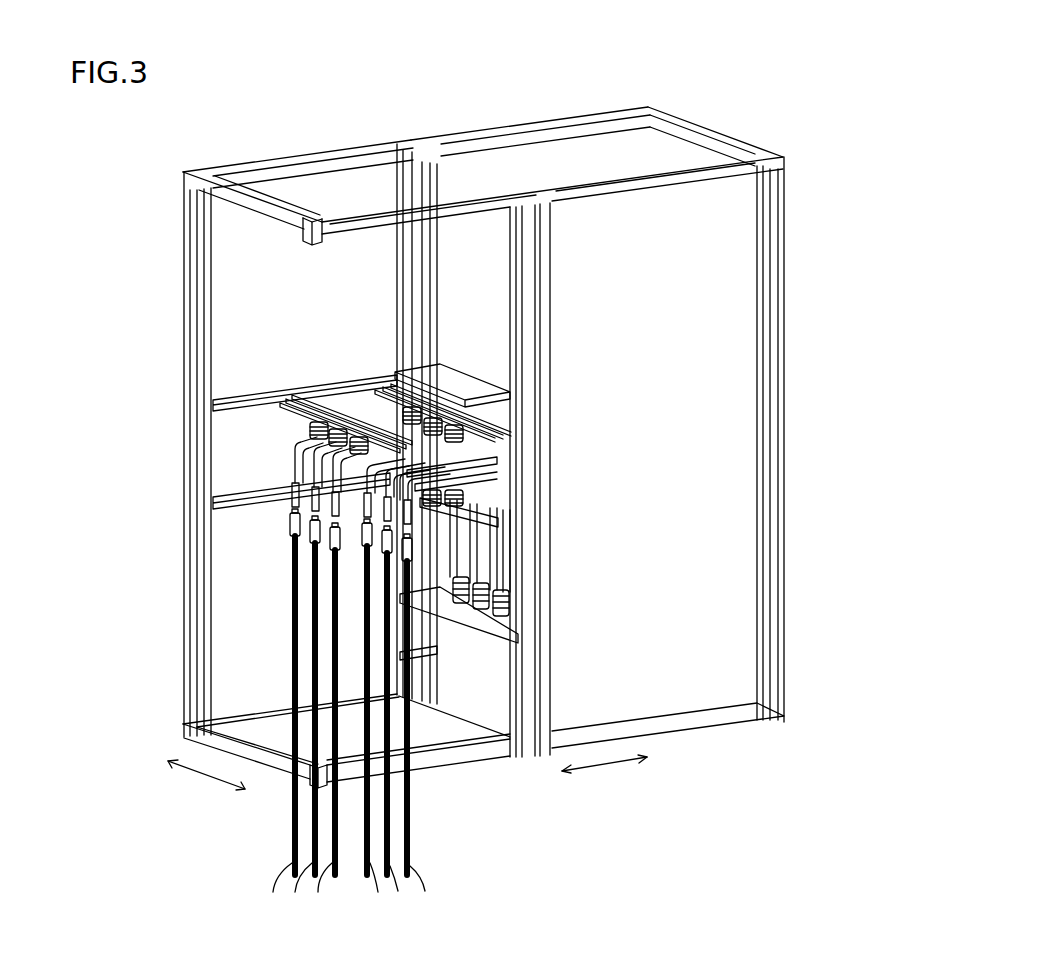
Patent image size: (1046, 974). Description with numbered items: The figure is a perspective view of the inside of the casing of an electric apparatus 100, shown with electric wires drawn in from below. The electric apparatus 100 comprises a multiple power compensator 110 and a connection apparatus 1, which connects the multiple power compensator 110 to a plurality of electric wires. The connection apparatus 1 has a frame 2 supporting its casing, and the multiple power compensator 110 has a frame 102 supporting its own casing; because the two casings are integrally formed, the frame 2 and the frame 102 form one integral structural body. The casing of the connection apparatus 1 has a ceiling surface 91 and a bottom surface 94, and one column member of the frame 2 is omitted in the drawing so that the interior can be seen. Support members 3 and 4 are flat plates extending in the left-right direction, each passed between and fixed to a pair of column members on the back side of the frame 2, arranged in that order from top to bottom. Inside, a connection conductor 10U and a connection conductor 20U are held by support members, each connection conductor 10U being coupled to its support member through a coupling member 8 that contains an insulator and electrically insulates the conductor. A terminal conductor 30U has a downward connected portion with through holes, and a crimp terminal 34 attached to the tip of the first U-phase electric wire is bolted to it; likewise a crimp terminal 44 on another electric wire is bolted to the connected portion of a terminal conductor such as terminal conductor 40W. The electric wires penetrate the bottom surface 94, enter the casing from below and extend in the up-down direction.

The electric apparatus 100 is at (143, 146).
The connection apparatus 1 is at (268, 149).
The frame 2 is at (185, 259).
The support member 3 is at (250, 402).
The support member 4 is at (247, 503).
The coupling member 8 is at (310, 428).
The connection conductor 10U is at (387, 427).
The connection conductor 20U is at (457, 567).
The terminal conductor 30U is at (300, 458).
The crimp terminal 34 is at (296, 490).
The terminal conductor 40W is at (296, 522).
The crimp terminal 44 is at (372, 541).
The ceiling surface 91 is at (365, 178).
The bottom surface 94 is at (427, 741).
The frame 102 is at (784, 271).
The multiple power compensator 110 is at (583, 149).